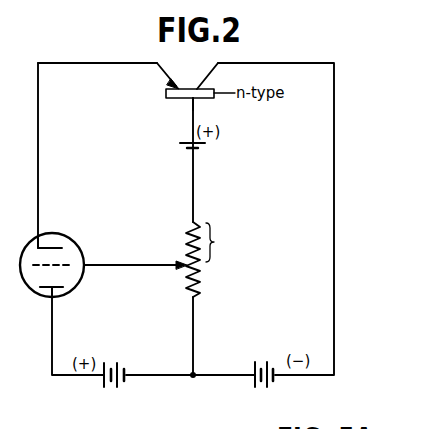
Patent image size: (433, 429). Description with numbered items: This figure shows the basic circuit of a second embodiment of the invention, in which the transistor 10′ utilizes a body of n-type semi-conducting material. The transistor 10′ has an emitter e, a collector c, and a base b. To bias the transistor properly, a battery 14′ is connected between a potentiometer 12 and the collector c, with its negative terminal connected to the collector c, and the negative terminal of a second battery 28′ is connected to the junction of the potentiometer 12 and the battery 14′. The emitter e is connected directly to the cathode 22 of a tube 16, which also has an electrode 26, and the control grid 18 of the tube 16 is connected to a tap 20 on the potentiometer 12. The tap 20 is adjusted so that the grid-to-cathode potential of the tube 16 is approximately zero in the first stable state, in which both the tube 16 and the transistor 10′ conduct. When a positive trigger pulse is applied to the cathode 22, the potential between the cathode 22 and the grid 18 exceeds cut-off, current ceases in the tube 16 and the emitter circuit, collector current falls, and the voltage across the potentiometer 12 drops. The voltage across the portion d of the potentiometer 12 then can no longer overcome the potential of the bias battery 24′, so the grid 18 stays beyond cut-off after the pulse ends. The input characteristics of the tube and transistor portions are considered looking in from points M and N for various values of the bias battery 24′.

The transistor 10′ is at (166, 99).
The emitter e is at (173, 87).
The collector c is at (200, 87).
The base b is at (195, 101).
The point M is at (100, 62).
The bias battery 24′ is at (183, 147).
The potentiometer 12 is at (203, 277).
The portion of potentiometer d is at (216, 242).
The tap 20 is at (177, 263).
The tube 16 is at (78, 249).
The cathode 22 is at (52, 246).
The control grid 18 is at (67, 267).
The cathode 26 is at (43, 296).
The battery 28′ is at (114, 369).
The battery 14′ is at (263, 362).
The point N is at (193, 378).